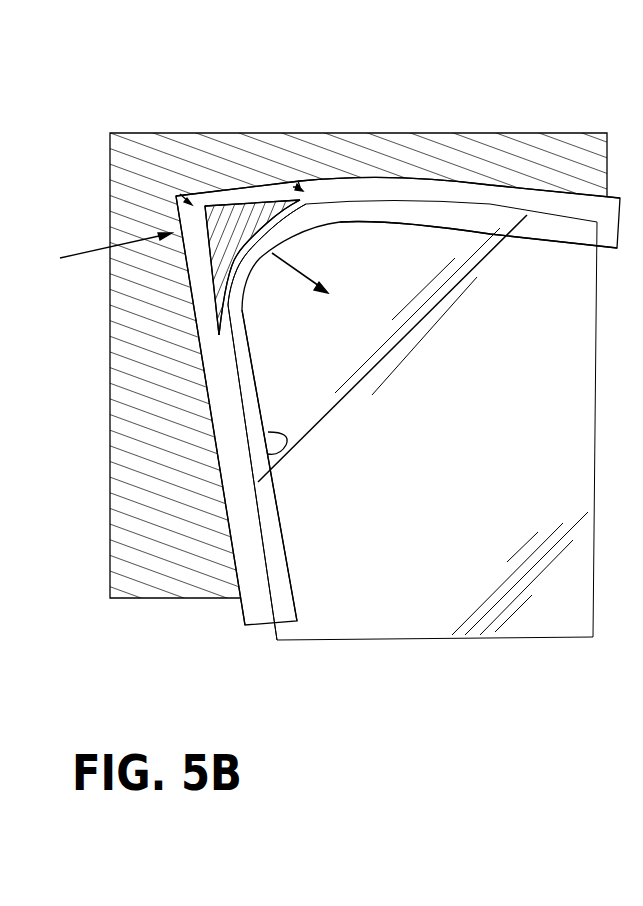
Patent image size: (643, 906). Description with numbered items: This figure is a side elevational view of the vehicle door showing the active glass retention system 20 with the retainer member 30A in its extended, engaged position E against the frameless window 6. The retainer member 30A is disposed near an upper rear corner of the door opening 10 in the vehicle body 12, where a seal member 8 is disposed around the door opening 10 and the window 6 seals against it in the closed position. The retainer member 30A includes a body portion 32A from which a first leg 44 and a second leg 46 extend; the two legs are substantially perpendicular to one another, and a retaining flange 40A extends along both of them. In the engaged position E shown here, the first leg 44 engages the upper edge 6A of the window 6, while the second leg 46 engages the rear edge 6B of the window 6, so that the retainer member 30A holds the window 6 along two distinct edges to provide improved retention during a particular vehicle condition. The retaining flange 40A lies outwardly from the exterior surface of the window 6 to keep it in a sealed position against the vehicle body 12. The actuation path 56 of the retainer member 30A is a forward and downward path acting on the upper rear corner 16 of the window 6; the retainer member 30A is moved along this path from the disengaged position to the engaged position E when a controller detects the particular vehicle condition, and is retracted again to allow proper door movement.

The vehicle body 12 is at (132, 148).
The retainer member 30A is at (221, 208).
The engaged position E is at (259, 267).
The first leg 44 is at (248, 203).
The upper edge 6A is at (335, 205).
The seal member 8 is at (391, 186).
The frameless window 6 is at (425, 247).
The body portion 32A is at (197, 222).
The active glass retention system 20 is at (100, 256).
The actuation path 56 is at (302, 266).
The second leg 46 is at (219, 337).
The retaining flange 40A is at (230, 346).
The rear edge 6B is at (255, 363).
The upper rear corner 16 is at (250, 250).
The door opening 10 is at (268, 444).